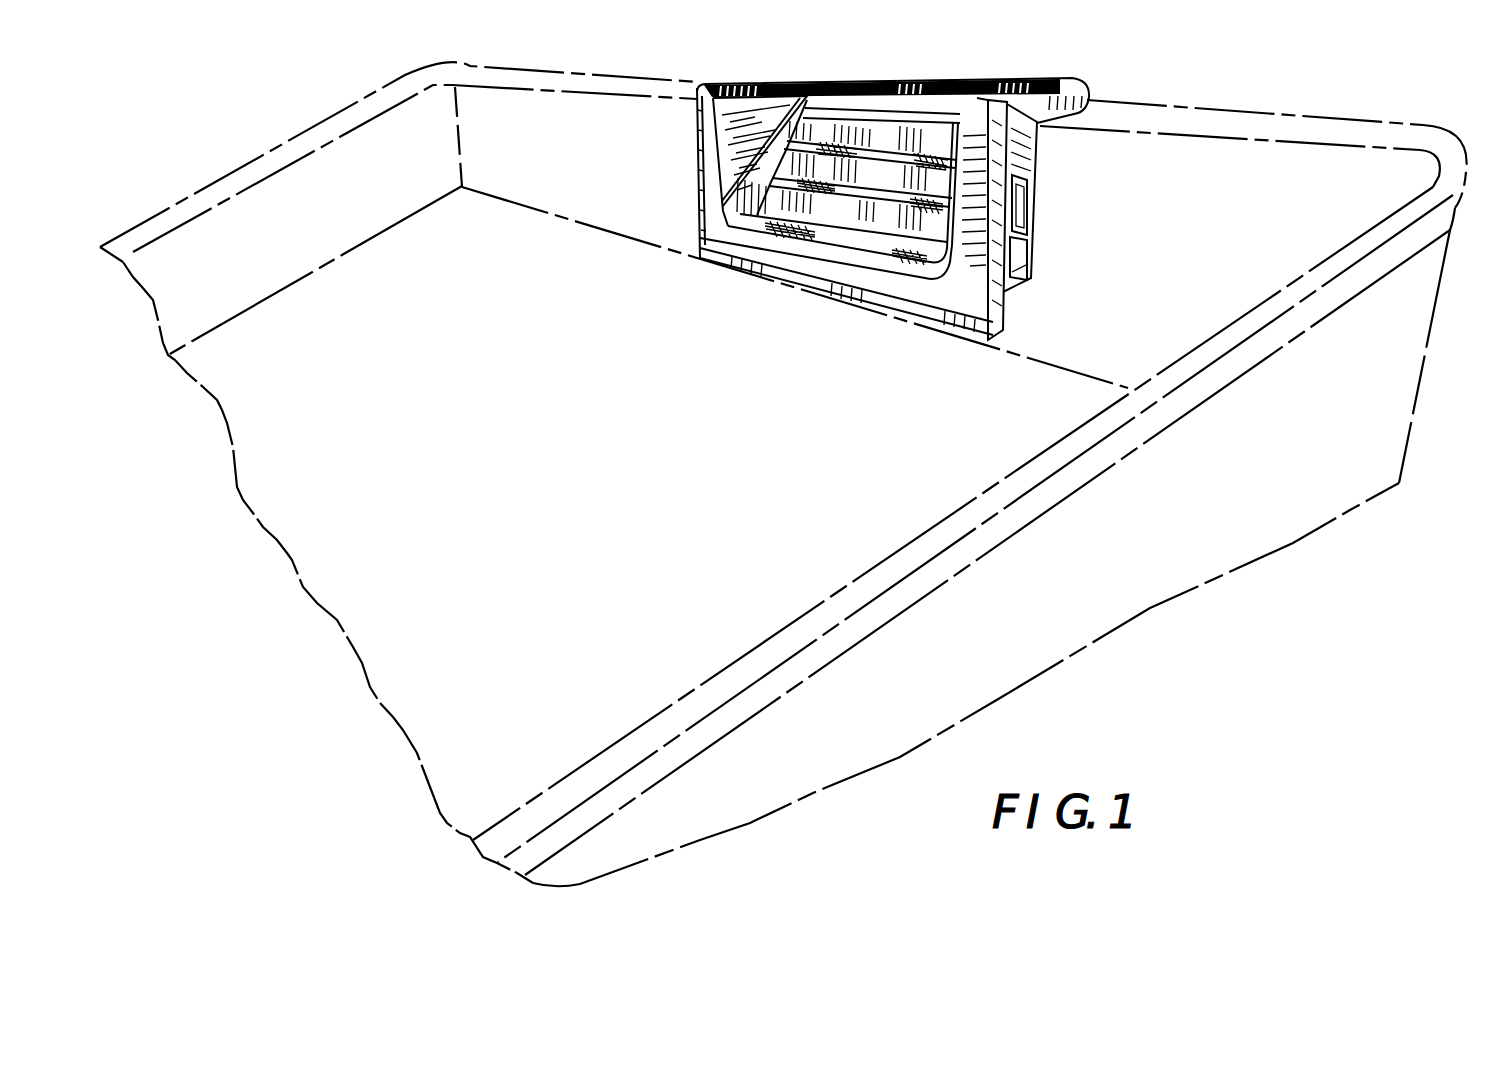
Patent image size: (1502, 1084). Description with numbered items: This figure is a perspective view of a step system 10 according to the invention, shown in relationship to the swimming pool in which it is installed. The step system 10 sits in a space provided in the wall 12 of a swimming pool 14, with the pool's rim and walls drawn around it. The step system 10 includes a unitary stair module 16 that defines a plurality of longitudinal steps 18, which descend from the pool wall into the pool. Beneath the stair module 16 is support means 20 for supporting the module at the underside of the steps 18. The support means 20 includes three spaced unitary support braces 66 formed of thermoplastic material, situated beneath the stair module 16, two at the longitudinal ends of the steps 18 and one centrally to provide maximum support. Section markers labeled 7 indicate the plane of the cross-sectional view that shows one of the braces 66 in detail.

The step system 10 is at (879, 183).
The wall 12 is at (1080, 350).
The swimming pool 14 is at (1294, 101).
The unitary stair module 16 is at (693, 189).
The longitudinal steps 18 is at (943, 203).
The support means 20 is at (1072, 209).
The support braces 66 is at (1030, 230).
The section line 7- 7 is at (995, 22).